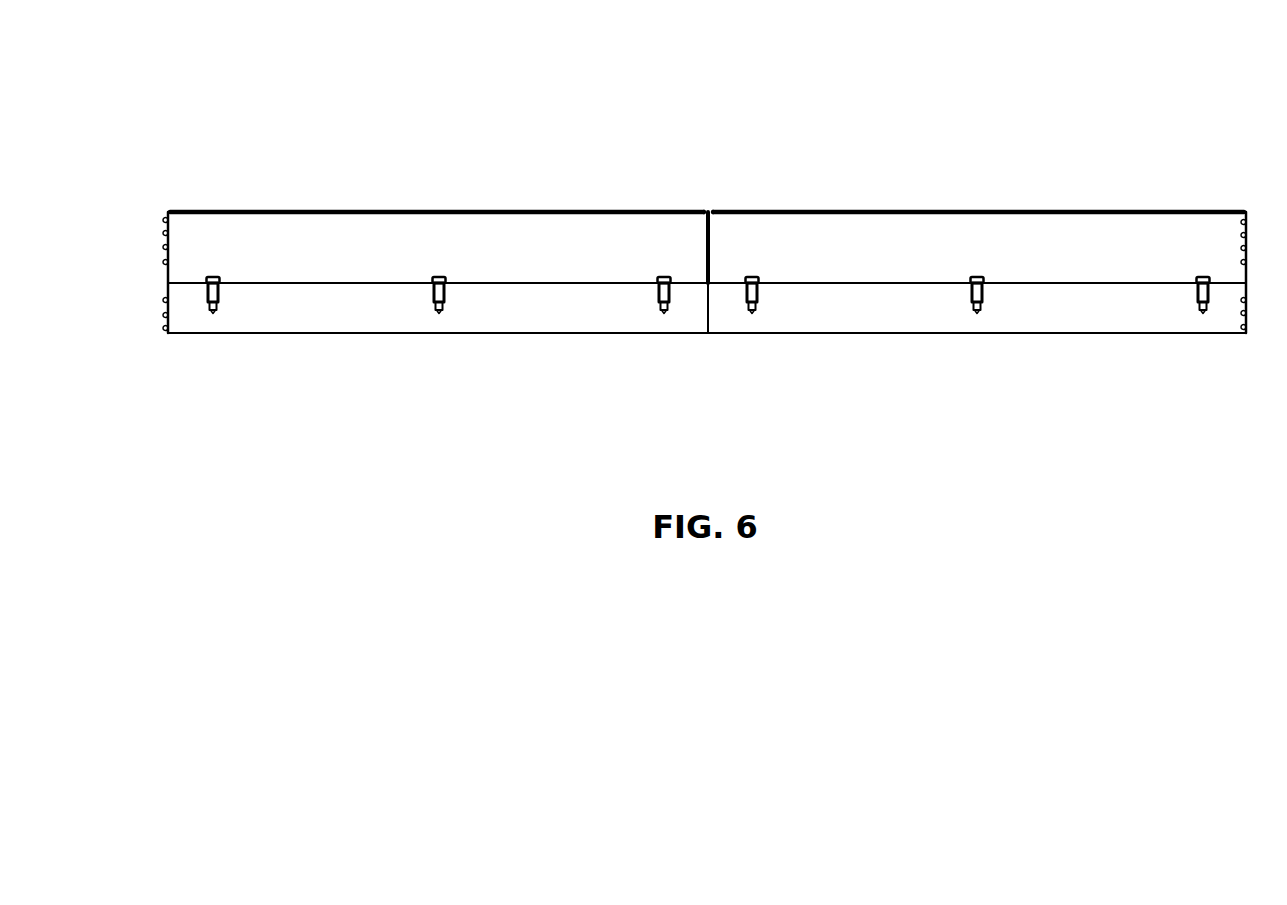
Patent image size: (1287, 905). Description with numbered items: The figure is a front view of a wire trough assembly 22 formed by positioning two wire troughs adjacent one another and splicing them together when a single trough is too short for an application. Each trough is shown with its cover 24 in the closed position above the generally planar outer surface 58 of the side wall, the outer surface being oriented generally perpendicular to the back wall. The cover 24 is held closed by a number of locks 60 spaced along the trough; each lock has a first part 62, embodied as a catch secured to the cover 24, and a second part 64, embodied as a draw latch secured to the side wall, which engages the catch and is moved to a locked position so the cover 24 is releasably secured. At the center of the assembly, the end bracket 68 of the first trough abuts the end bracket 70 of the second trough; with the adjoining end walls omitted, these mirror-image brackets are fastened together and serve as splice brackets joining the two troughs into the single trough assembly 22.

The wire trough assembly 22 is at (862, 97).
The cover 24 is at (494, 245).
The outer surface 58 is at (543, 310).
The lock 60 is at (200, 310).
The first part 62 is at (211, 277).
The second part 64 is at (215, 310).
The end bracket 68 is at (714, 226).
The end bracket 70 is at (708, 224).